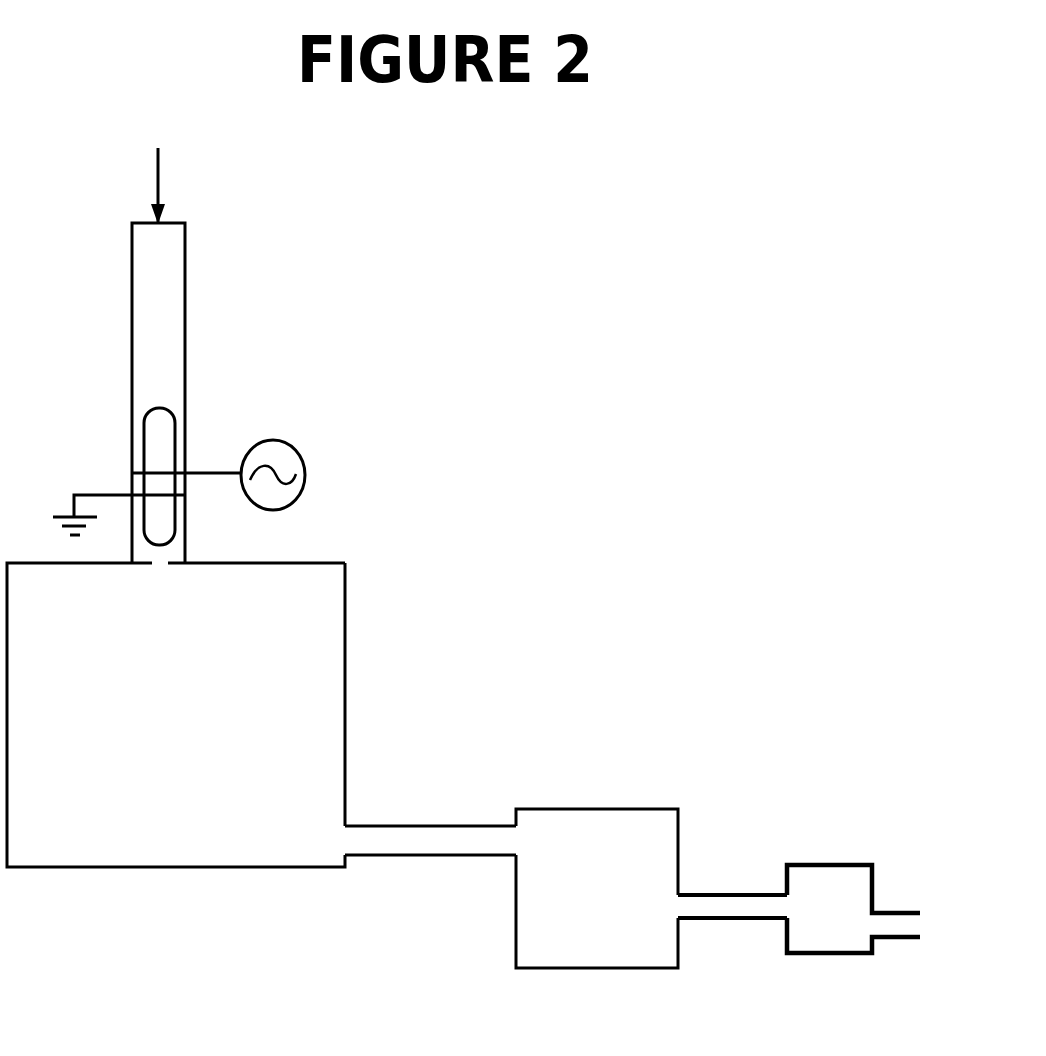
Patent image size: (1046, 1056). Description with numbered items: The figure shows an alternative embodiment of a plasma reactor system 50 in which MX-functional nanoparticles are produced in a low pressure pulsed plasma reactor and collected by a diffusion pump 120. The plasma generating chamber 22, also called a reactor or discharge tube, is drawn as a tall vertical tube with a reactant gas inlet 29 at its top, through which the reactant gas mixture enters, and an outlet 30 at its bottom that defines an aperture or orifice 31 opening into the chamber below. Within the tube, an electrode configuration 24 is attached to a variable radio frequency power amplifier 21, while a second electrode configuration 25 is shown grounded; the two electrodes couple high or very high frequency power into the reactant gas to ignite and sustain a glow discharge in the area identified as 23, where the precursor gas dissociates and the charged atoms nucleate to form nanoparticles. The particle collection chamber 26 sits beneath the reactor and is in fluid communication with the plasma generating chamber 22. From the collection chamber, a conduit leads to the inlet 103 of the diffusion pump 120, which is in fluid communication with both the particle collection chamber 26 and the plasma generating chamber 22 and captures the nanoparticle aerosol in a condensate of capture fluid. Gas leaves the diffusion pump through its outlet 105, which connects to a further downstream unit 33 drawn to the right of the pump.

The variable radio frequency power amplifier 21 is at (305, 460).
The plasma generating chamber 22 is at (185, 333).
The plasma area 23 is at (152, 448).
The electrode configuration 24 is at (133, 468).
The second electrode configuration 25 is at (72, 515).
The particle collection chamber 26 is at (53, 868).
The reactant gas inlet 29 is at (158, 182).
The outlet 30 is at (187, 555).
The aperture or orifice 31 is at (152, 565).
The pump 33 is at (830, 862).
The plasma reactor system 50 is at (430, 634).
The inlet of the diffusion pump 103 is at (472, 827).
The outlet of the diffusion pump 105 is at (710, 892).
The diffusion pump 120 is at (633, 810).